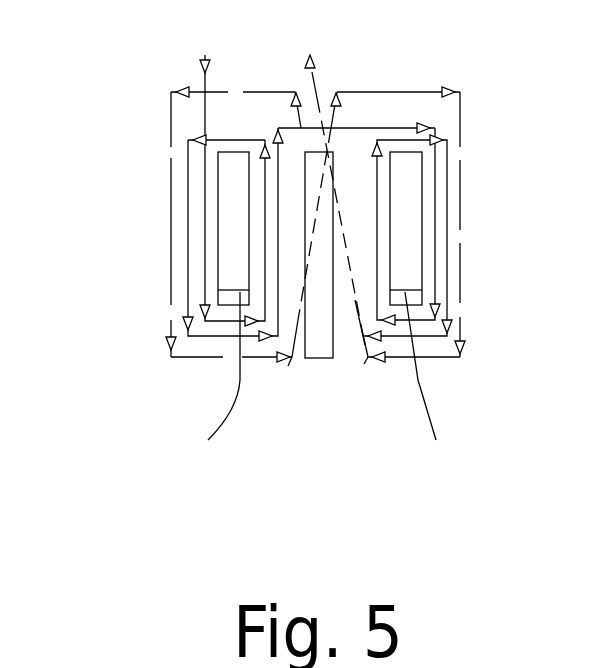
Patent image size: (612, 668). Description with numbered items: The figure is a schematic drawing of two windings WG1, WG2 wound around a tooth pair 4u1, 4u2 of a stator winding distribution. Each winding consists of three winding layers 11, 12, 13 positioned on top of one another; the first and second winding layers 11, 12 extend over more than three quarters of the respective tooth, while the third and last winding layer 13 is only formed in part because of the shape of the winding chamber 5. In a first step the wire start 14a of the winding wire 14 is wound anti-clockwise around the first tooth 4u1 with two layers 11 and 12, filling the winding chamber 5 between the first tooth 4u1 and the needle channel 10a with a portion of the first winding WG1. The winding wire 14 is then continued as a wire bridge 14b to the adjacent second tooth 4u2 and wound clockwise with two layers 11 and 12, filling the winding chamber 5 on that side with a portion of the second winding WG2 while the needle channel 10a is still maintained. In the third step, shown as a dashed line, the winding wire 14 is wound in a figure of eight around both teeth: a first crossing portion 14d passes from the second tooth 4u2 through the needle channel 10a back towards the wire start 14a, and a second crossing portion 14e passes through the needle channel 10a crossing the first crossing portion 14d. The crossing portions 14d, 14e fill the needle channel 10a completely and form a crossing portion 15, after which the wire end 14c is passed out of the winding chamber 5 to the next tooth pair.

The winding chamber 5 is at (290, 378).
The needle channel 10a is at (323, 347).
The first winding layer 11 is at (205, 231).
The second winding layer 12 is at (195, 251).
The third winding layer 13 is at (171, 190).
The winding wire 14 is at (191, 65).
The wire start 14a is at (210, 66).
The wire bridge 14b is at (383, 128).
The wire end 14c is at (322, 75).
The first crossing portion 14d is at (345, 277).
The second crossing portion 14e is at (305, 252).
The crossing portion 15 is at (280, 235).
The first tooth 4u1 is at (211, 382).
The second tooth 4u2 is at (439, 382).
The first winding WG1 is at (210, 398).
The second winding WG2 is at (431, 398).